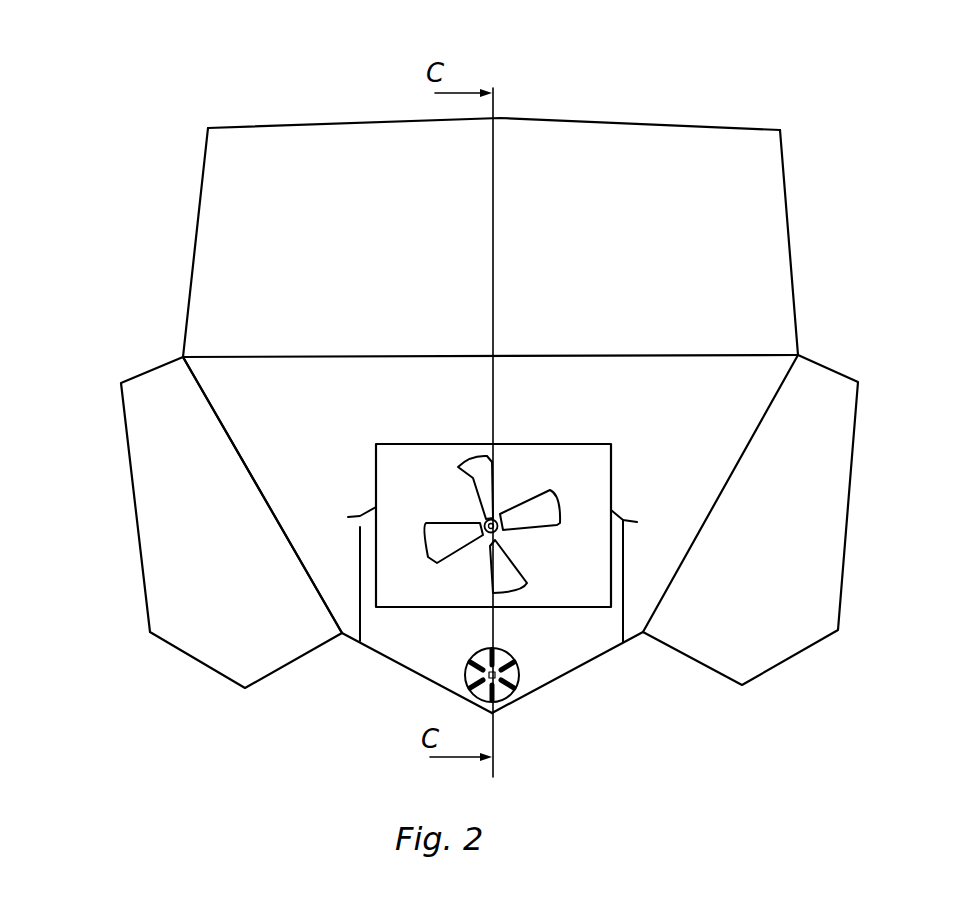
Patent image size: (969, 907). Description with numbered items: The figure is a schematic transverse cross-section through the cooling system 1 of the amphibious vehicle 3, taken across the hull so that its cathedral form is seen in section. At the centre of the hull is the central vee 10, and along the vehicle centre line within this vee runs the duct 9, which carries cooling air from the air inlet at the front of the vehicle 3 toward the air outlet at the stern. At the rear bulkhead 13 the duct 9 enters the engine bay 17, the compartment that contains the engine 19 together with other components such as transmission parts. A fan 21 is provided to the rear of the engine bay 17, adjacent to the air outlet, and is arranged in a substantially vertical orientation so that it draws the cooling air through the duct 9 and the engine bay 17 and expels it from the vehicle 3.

The cooling system 1 is at (672, 412).
The amphibious vehicle 3 is at (307, 125).
The duct 9 is at (595, 613).
The central vee 10 is at (392, 667).
The rear bulkhead 13 is at (537, 574).
The engine bay 17 is at (287, 470).
The engine 19 is at (457, 443).
The fan 21 is at (517, 600).